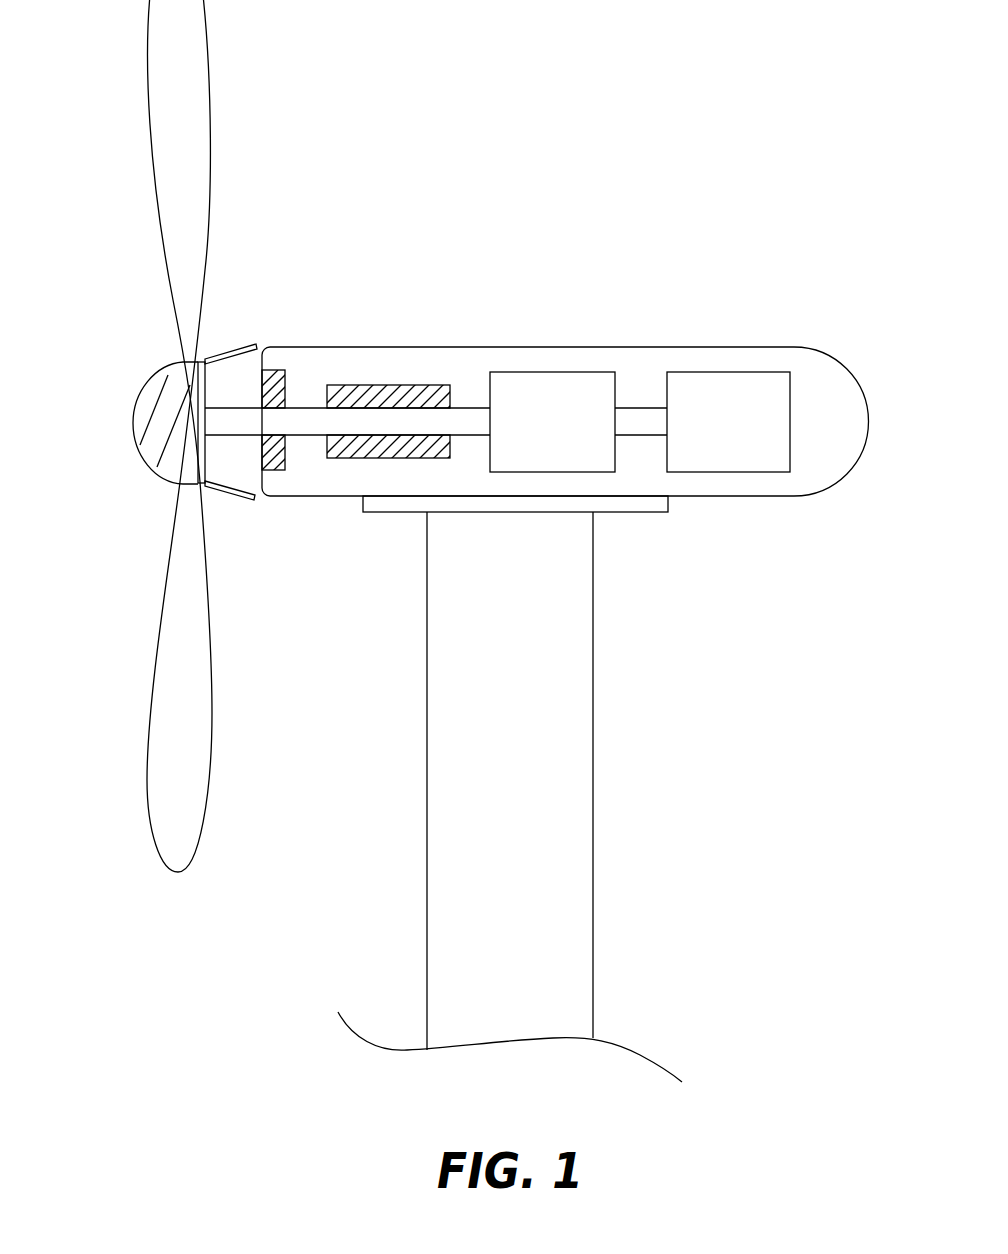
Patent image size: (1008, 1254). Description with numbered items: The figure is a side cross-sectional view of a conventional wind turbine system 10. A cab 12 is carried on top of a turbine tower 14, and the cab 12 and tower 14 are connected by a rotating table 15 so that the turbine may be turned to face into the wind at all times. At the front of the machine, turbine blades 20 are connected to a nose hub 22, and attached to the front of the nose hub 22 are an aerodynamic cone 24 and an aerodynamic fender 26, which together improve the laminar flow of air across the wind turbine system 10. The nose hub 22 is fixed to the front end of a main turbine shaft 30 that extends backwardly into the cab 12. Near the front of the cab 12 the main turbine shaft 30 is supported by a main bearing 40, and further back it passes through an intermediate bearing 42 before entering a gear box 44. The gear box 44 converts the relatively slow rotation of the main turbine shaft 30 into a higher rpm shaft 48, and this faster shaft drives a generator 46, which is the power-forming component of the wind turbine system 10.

The wind turbine system 10 is at (528, 222).
The cab 12 is at (563, 347).
The turbine tower 14 is at (577, 820).
The rotating table 15 is at (575, 507).
The turbine blades 20 is at (198, 159).
The nose hub 22 is at (208, 352).
The aerodynamic cone 24 is at (168, 407).
The aerodynamic fender 26 is at (247, 497).
The main turbine shaft 30 is at (312, 418).
The main bearing 40 is at (272, 382).
The intermediate bearing 42 is at (405, 395).
The gear box 44 is at (598, 462).
The generator 46 is at (735, 400).
The higher rpm shaft 48 is at (648, 433).